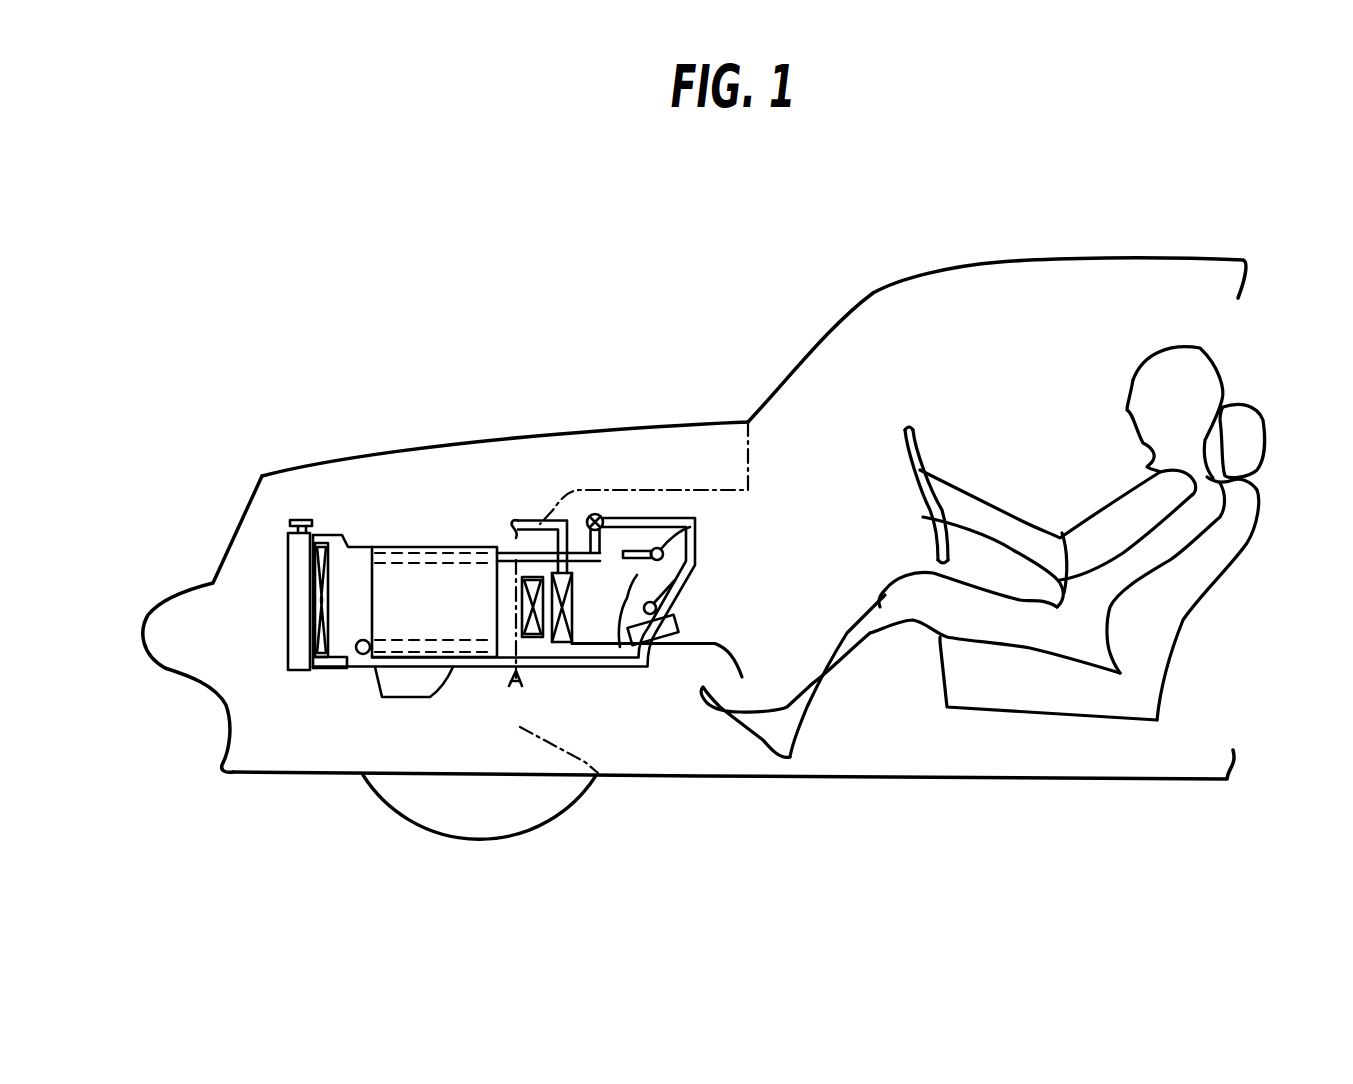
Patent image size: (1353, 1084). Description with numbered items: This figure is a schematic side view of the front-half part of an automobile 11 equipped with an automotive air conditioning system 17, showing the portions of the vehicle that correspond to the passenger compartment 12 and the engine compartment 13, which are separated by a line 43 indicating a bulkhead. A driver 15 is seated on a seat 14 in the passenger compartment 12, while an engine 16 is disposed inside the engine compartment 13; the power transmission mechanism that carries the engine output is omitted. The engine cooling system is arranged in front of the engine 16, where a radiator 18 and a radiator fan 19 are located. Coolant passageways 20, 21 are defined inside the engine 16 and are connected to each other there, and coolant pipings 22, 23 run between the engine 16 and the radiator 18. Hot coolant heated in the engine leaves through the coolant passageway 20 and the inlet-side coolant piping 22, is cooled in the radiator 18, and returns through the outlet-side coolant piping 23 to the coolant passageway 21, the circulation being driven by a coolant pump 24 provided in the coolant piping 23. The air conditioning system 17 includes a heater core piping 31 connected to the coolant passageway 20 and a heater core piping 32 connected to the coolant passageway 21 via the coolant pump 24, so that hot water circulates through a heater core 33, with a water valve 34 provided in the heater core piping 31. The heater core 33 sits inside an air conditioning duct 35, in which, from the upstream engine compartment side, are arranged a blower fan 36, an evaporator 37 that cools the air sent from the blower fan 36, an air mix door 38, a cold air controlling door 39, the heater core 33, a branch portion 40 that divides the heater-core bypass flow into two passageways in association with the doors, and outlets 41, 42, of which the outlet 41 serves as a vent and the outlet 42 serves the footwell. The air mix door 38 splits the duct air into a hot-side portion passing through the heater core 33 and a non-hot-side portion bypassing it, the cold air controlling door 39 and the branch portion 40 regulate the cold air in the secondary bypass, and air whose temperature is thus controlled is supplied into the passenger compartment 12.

The automobile 11 is at (843, 310).
The passenger compartment 12 is at (1057, 323).
The engine compartment 13 is at (252, 573).
The seat 14 is at (1198, 577).
The driver 15 is at (1127, 500).
The engine 16 is at (433, 545).
The air conditioning system 17 is at (497, 482).
The radiator 18 is at (297, 670).
The radiator fan 19 is at (338, 536).
The coolant passageway 20 is at (403, 575).
The coolant passageway 21 is at (460, 633).
The coolant piping 22 is at (342, 543).
The coolant piping 23 is at (330, 670).
The coolant pump 24 is at (361, 655).
The heater core piping 31 is at (690, 522).
The heater core piping 32 is at (558, 644).
The heater core 33 is at (705, 645).
The water valve 34 is at (595, 514).
The air conditioning duct 35 is at (602, 560).
The blower fan 36 is at (567, 644).
The evaporator 37 is at (594, 648).
The air mix door 38 is at (697, 553).
The cold air controlling door 39 is at (699, 528).
The branch portion 40 is at (630, 646).
The outlet 41 is at (755, 645).
The outlet 42 is at (743, 678).
The bulkhead line 43 is at (517, 683).